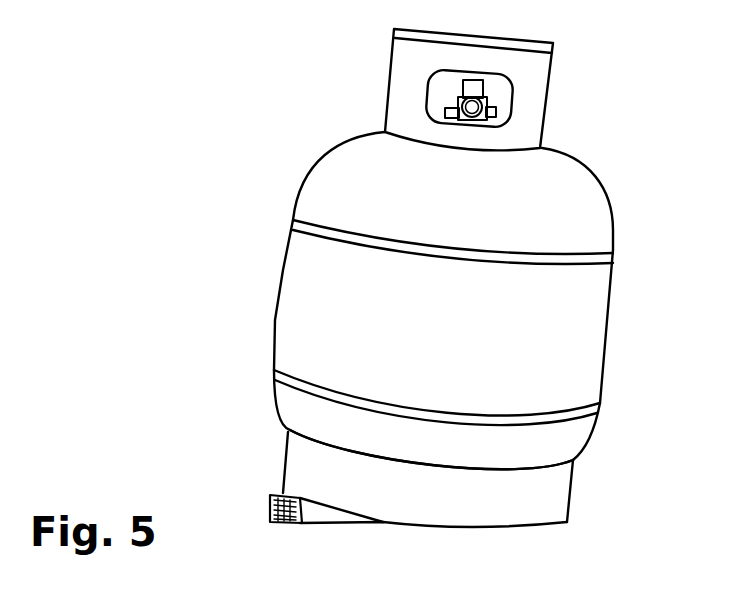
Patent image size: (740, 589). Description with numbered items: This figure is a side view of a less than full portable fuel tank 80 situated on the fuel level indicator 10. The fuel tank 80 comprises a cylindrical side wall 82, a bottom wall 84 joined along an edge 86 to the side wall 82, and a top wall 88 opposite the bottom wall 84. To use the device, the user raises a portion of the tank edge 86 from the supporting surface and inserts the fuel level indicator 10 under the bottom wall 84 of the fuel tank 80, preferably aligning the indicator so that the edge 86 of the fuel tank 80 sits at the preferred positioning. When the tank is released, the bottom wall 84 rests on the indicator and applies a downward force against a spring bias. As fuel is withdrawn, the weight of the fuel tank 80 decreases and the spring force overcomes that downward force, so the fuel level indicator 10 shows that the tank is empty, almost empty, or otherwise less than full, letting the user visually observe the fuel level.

The fuel level indicator 10 is at (306, 524).
The fuel tank 80 is at (597, 177).
The cylindrical side wall 82 is at (597, 330).
The bottom wall 84 is at (550, 505).
The edge 86 is at (573, 460).
The top wall 88 is at (527, 108).